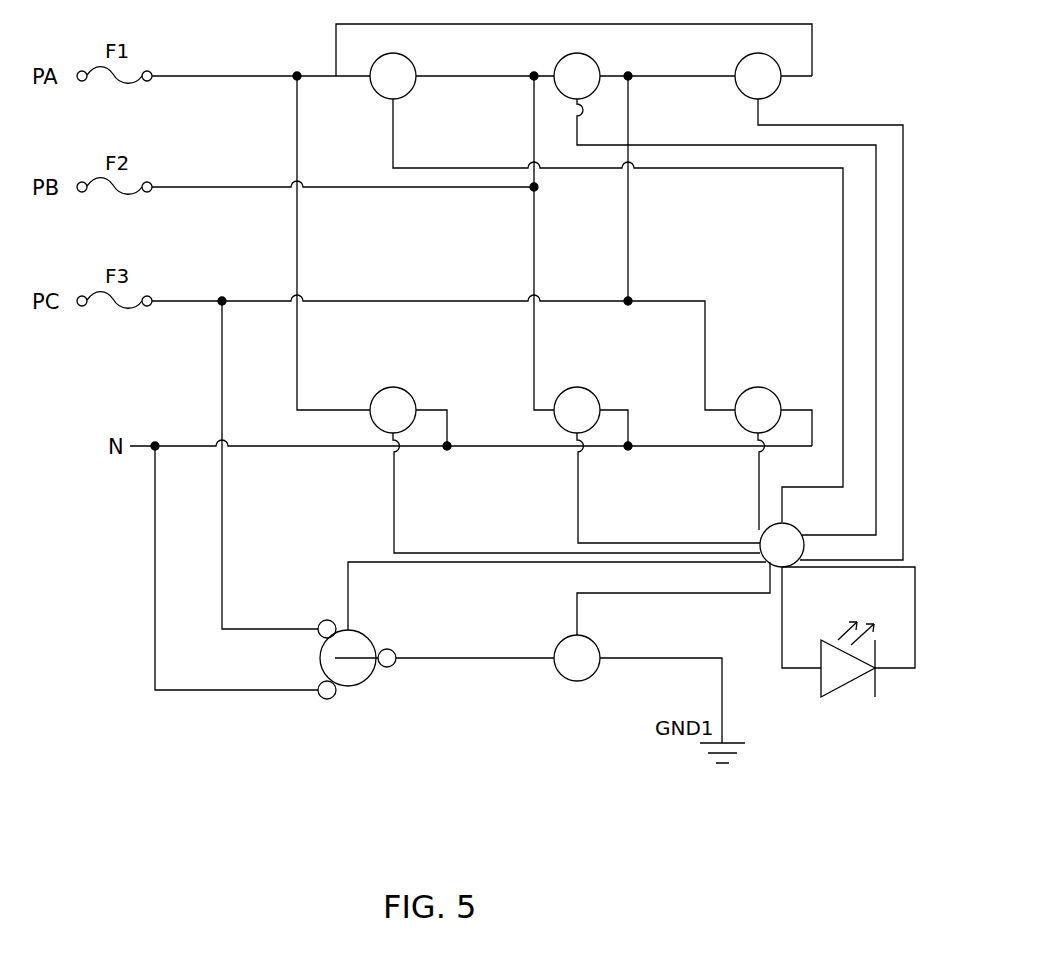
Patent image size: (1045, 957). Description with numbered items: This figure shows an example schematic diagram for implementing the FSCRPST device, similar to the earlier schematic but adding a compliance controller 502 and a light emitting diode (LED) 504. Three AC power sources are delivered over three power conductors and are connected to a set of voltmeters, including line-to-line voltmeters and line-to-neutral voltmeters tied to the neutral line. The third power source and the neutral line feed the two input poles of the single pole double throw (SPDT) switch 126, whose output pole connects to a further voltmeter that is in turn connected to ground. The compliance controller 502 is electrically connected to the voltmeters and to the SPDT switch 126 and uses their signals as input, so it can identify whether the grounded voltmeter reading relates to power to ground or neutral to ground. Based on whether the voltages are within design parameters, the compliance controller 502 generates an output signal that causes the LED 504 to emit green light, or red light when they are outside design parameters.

The single pole double throw (SPDT) switch 126 is at (542, 648).
The compliance controller 502 is at (795, 525).
The light emitting diode (LED) 504 is at (835, 690).